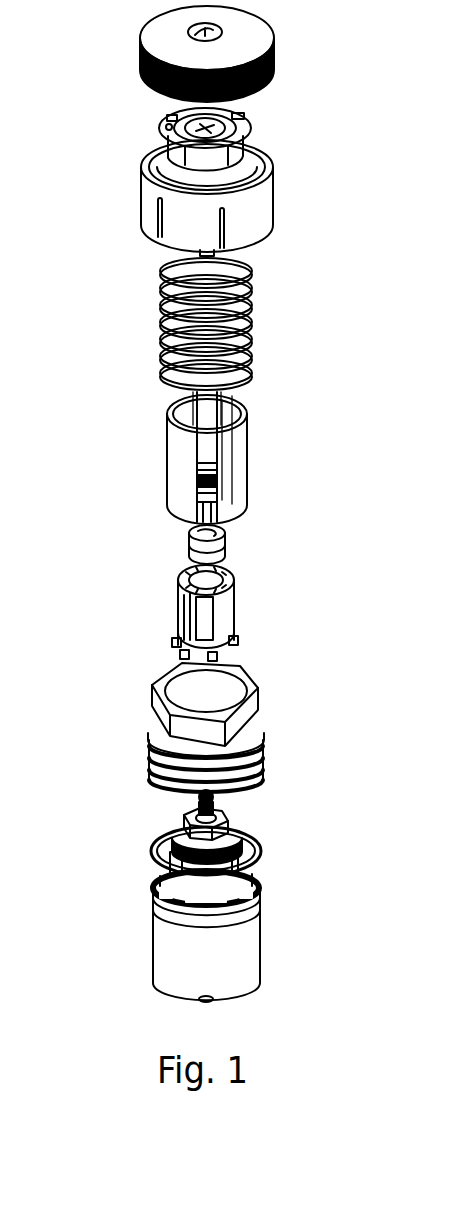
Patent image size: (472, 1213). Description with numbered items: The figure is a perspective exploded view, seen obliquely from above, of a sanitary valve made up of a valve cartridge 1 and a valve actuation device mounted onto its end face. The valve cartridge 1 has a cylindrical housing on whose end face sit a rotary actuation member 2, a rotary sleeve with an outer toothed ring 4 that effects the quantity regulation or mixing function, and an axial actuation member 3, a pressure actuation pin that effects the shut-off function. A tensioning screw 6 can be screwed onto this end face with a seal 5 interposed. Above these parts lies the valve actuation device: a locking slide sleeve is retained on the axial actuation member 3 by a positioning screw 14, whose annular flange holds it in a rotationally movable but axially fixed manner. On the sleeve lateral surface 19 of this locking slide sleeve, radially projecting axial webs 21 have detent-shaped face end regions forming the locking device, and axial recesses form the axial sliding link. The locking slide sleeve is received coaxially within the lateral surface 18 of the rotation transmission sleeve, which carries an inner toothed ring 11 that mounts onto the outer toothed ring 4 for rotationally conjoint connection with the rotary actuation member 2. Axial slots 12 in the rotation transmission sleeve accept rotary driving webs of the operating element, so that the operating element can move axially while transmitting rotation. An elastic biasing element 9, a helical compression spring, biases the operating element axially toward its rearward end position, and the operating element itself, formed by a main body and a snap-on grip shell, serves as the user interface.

The elastic biasing element 9 is at (250, 322).
The axial slot 12 is at (203, 451).
The lateral surface 18 is at (232, 492).
The inner toothed ring 11 is at (197, 480).
The positioning screw 14 is at (222, 550).
The axial web 21 is at (197, 620).
The sleeve lateral surface 19 is at (176, 640).
The tensioning screw 6 is at (260, 733).
The axial actuation member 3 is at (220, 802).
The rotary actuation member 2 is at (233, 835).
The outer toothed ring 4 is at (170, 830).
The seal 5 is at (152, 868).
The valve cartridge 1 is at (247, 942).